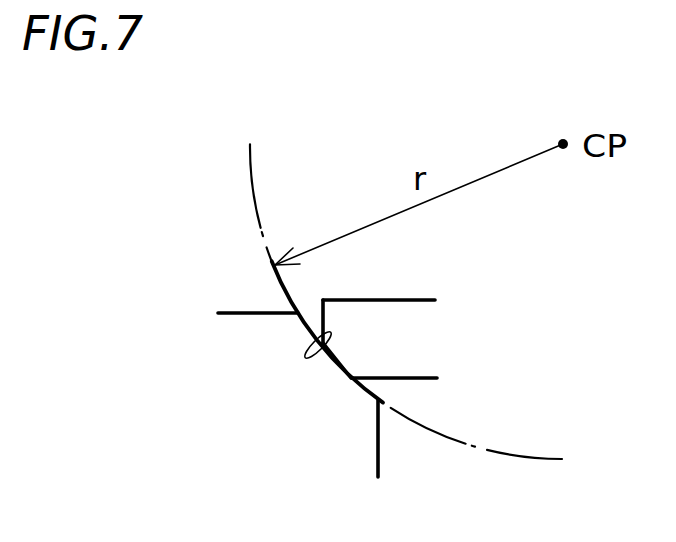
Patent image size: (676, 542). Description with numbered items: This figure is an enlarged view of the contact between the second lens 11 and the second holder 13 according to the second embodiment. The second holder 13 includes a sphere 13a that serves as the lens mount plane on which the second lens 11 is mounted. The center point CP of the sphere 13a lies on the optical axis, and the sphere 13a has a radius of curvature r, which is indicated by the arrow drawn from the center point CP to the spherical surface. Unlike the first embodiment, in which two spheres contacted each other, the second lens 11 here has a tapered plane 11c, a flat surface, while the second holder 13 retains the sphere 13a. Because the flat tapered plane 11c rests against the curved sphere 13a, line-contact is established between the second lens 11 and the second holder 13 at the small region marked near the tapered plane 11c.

The second lens 11 is at (422, 322).
The tapered plane 11c is at (323, 322).
The second holder 13 is at (275, 391).
The sphere 13a is at (311, 333).